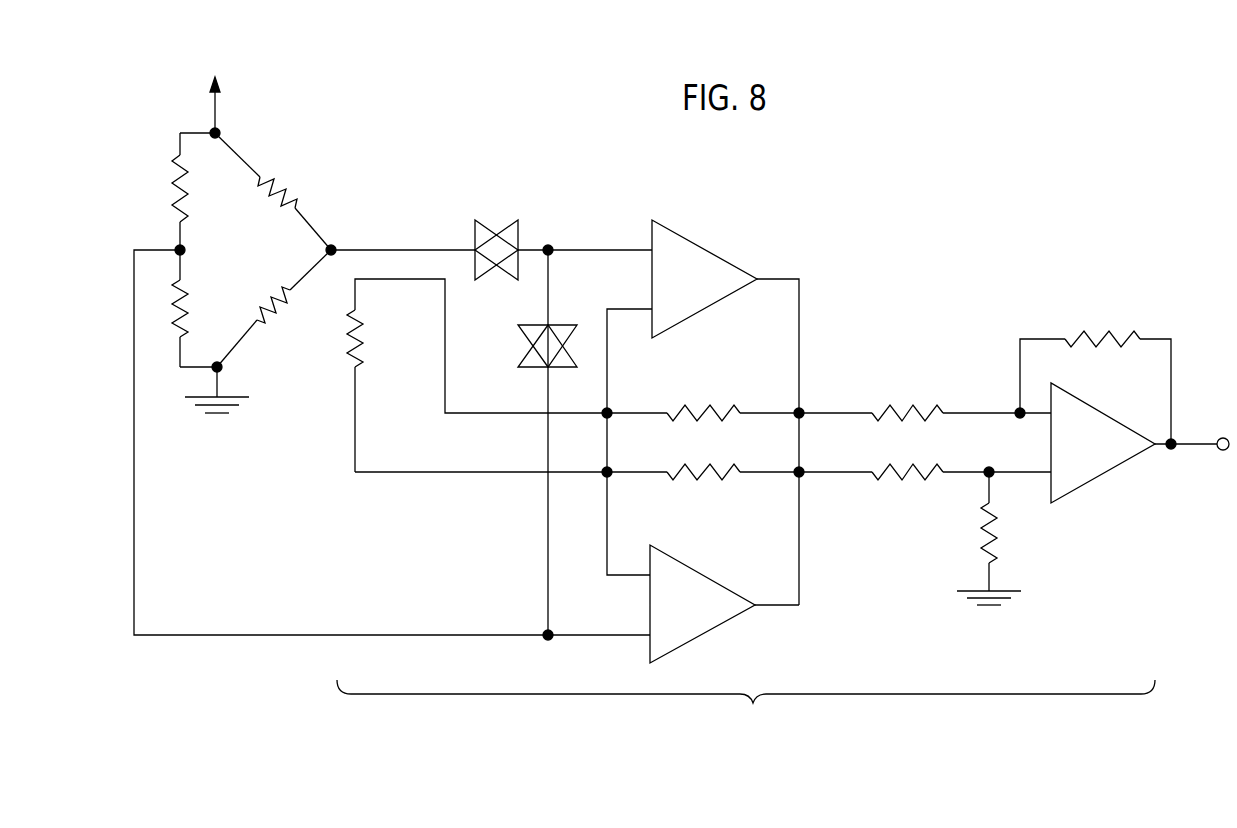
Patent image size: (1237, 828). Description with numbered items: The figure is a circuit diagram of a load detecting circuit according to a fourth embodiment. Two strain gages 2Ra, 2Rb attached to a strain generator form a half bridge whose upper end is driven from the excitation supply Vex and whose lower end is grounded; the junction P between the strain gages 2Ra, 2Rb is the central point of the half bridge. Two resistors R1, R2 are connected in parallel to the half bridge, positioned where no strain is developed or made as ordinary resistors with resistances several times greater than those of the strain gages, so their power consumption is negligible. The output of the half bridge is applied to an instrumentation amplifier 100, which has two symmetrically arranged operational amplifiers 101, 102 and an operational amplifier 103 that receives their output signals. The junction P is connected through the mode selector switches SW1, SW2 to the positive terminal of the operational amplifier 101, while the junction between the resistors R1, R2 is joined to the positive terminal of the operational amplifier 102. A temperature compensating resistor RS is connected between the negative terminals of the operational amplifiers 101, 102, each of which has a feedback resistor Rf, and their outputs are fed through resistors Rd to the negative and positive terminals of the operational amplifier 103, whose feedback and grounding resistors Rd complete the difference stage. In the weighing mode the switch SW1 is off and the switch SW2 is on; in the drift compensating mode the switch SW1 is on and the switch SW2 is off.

The instrumentation amplifier 100 is at (746, 708).
The operational amplifier 101 is at (697, 297).
The operational amplifier 102 is at (695, 620).
The operational amplifier 103 is at (1095, 458).
The mode selector switch SW1 is at (527, 353).
The mode selector switch SW2 is at (480, 222).
The resistor R1 is at (169, 191).
The resistor R2 is at (168, 308).
The strain gage 2Ra is at (273, 191).
The strain gage 2Rb is at (274, 308).
The temperature compensating resistor RS is at (477, 375).
The feedback resistor Rf is at (703, 445).
The difference amplifier resistor Rd is at (985, 458).
The junction P is at (335, 240).
The excitation voltage Vex is at (215, 96).